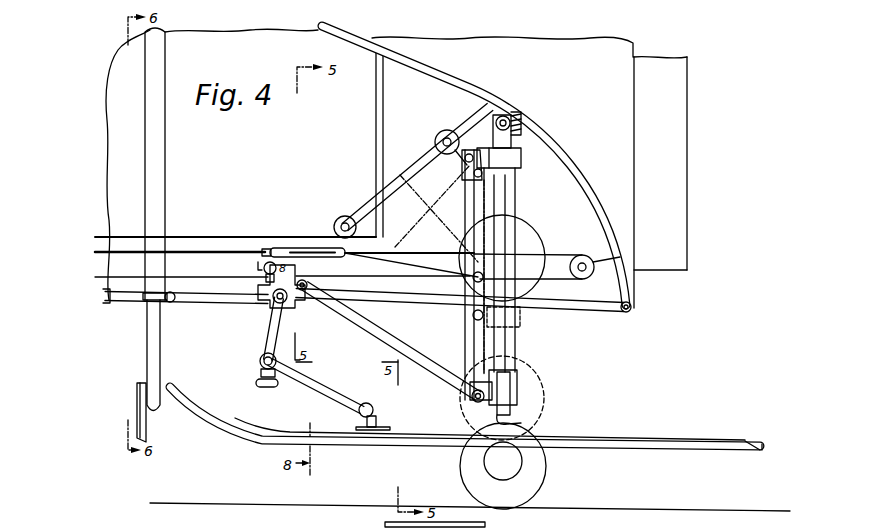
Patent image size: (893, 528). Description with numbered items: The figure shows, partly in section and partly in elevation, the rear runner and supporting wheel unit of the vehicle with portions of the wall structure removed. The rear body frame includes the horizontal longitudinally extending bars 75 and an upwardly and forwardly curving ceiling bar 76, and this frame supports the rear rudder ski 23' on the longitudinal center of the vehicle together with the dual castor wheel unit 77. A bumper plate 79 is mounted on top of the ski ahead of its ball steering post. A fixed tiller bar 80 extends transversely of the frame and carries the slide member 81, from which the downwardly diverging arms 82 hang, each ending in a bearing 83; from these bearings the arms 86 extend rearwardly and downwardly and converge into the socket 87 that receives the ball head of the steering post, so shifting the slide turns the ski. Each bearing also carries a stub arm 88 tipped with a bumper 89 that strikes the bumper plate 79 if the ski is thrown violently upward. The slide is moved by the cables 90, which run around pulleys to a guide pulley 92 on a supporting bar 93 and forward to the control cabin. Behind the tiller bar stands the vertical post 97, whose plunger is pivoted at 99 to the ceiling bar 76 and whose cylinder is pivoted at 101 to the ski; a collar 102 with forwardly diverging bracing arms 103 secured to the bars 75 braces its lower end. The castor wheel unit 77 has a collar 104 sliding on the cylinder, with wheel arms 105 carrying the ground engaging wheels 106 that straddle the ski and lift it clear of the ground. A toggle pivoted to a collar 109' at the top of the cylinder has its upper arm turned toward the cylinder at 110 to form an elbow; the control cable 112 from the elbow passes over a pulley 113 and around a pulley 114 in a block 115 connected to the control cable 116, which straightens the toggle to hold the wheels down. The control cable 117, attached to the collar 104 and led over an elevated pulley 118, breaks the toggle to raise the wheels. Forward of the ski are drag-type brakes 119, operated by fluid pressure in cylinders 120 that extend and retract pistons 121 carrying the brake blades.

The rear rudder ski 23' is at (721, 428).
The horizontal longitudinally extending bars 75 is at (599, 314).
The ceiling bar 76 is at (466, 85).
The dual castor wheel unit 77 is at (525, 386).
The bumper plate 79 is at (240, 420).
The tiller bar 80 is at (288, 304).
The slide member 81 is at (258, 300).
The downwardly diverging arms 82 is at (270, 323).
The bearing 83 is at (261, 357).
The arm 86 is at (322, 393).
The socket 87 is at (357, 410).
The stub arm 88 is at (260, 373).
The bumper 89 is at (262, 388).
The cable 90 is at (103, 291).
The guide pulley 92 is at (290, 282).
The supporting bar 93 is at (264, 268).
The vertical post 97 is at (513, 212).
The pivotal connection 99 is at (509, 118).
The pivot 101 is at (520, 421).
The collar 102 is at (512, 400).
The bracing arms 103 is at (437, 352).
The collar 104 is at (512, 372).
The wheel arm 105 is at (488, 398).
The ground engaging wheel 106 is at (534, 478).
The collar 109' is at (533, 144).
The turned end 110 is at (393, 245).
The control cable 112 is at (556, 252).
The pulley 113 is at (592, 250).
The pulley 114 is at (343, 254).
The block 115 is at (288, 248).
The control cable 116 is at (205, 250).
The control cable 117 is at (96, 237).
The elevated pulley 118 is at (447, 130).
The ground engaging brakes 119 is at (137, 395).
The cylinder 120 is at (165, 160).
The piston 121 is at (146, 330).